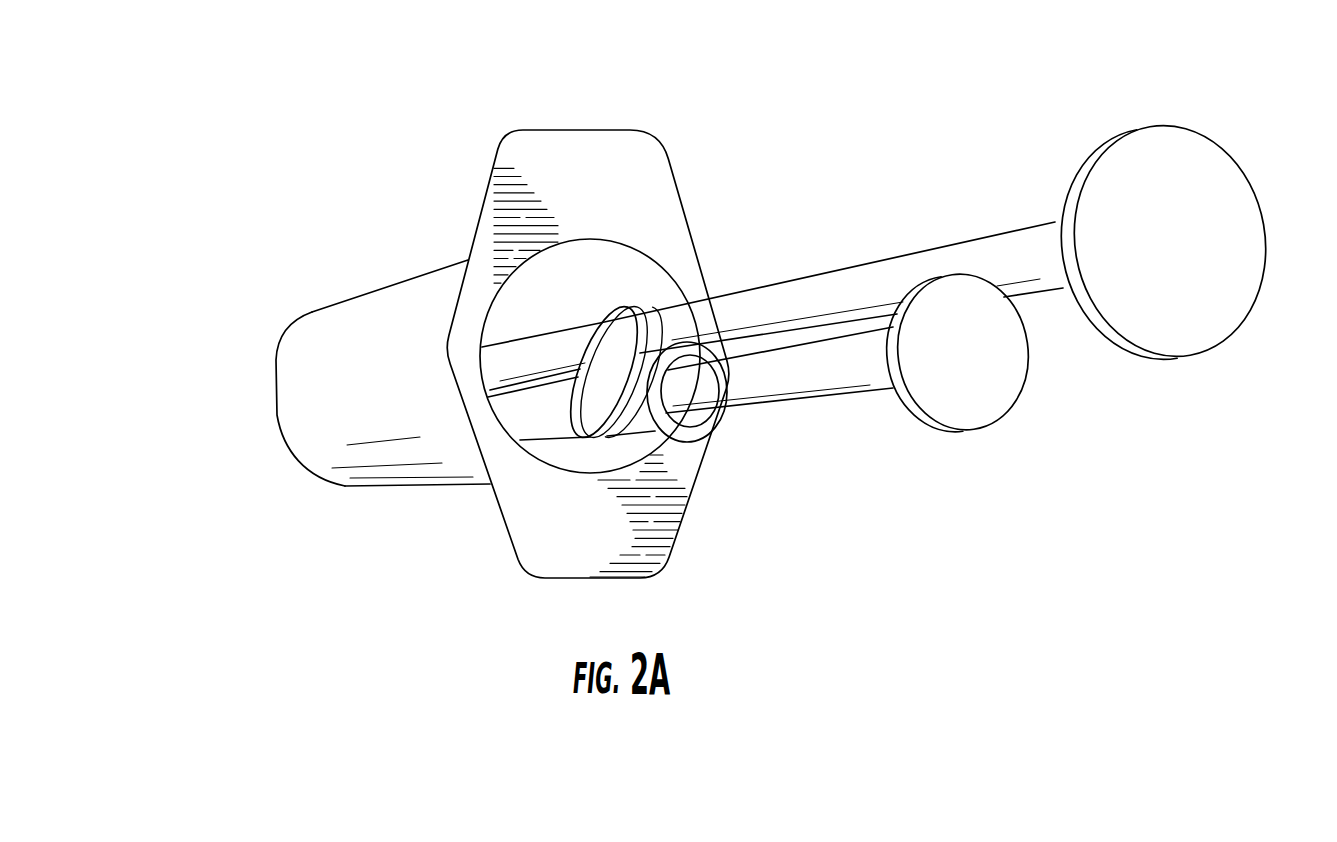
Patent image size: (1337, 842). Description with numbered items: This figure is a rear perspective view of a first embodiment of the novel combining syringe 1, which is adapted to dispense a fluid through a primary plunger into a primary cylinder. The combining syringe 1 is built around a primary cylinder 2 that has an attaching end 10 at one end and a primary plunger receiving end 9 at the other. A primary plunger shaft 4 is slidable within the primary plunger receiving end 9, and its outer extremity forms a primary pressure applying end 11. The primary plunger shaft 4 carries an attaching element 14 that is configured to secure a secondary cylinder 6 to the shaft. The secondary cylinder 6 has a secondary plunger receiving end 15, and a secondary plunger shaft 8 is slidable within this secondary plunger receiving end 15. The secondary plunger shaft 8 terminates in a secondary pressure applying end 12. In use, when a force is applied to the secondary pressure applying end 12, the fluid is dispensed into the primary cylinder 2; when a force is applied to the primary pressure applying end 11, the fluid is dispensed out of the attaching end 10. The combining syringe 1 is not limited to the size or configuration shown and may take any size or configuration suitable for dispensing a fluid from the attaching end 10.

The combining syringe 1 is at (760, 307).
The primary cylinder 2 is at (389, 363).
The primary plunger shaft 4 is at (772, 281).
The secondary cylinder 6 is at (539, 393).
The secondary plunger shaft 8 is at (779, 397).
The primary plunger receiving end 9 is at (588, 301).
The attaching end 10 is at (274, 363).
The primary pressure applying end 11 is at (1179, 242).
The secondary pressure applying end 12 is at (957, 412).
The attaching element 14 is at (611, 353).
The secondary plunger receiving end 15 is at (569, 466).